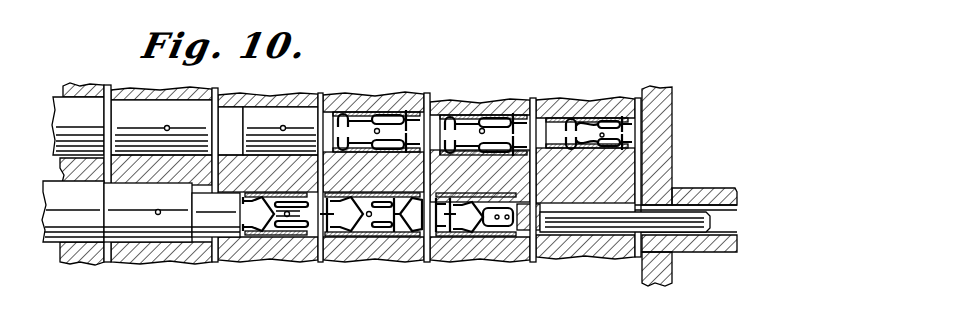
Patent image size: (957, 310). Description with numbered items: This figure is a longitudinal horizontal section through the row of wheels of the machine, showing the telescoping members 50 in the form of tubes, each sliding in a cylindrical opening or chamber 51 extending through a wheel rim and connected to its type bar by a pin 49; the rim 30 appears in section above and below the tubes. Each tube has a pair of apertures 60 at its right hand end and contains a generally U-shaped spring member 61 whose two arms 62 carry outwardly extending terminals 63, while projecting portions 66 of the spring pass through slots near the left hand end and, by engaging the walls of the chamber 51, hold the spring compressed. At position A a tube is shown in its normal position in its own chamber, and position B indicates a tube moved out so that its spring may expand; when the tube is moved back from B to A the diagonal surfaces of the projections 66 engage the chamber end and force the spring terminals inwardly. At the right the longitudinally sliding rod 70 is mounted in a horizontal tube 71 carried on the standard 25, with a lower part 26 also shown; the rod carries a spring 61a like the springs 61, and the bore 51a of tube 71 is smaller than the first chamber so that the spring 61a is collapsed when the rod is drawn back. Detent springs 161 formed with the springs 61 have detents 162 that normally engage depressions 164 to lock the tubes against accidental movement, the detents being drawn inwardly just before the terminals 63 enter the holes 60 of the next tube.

The standard 25 is at (668, 106).
The lower flange 26 is at (716, 253).
The top wall section 30 is at (372, 114).
The pin 49 is at (351, 238).
The member 50 is at (478, 118).
The opening 51 is at (518, 236).
The bore 51a is at (662, 204).
The apertures 60 is at (533, 104).
The spring member 61 is at (396, 112).
The spring 61a is at (490, 228).
The arms 62 is at (367, 113).
The terminals 63 is at (345, 111).
The projecting portions 66 is at (477, 236).
The rod 70 is at (608, 216).
The tube 71 is at (736, 210).
The detent springs 161 is at (383, 238).
The detents 162 is at (428, 113).
The depressions 164 is at (178, 252).
The position A is at (589, 116).
The position B is at (443, 240).